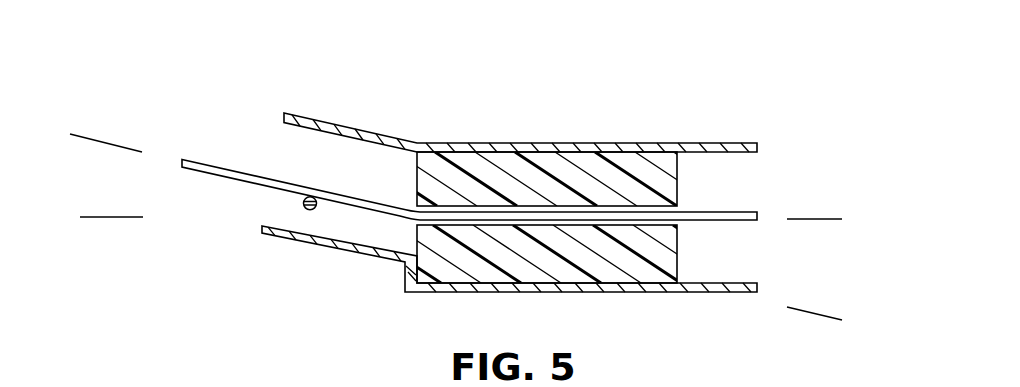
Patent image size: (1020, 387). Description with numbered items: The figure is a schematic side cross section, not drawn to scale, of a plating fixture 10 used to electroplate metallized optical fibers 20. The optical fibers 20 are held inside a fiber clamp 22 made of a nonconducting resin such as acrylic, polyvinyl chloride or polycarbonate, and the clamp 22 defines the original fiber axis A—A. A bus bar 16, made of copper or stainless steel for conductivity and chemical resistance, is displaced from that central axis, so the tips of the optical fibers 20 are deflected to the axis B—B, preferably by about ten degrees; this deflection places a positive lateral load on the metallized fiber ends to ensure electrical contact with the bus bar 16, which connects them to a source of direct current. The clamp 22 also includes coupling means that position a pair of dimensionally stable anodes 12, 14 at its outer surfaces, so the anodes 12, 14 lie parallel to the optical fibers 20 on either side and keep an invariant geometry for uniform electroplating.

The plating fixture 10 is at (636, 96).
The dimensionally stable anode 12 is at (432, 152).
The dimensionally stable anode 14 is at (442, 287).
The bus bar 16 is at (311, 210).
The optical fibers 20 is at (230, 168).
The fiber clamp 22 is at (567, 245).